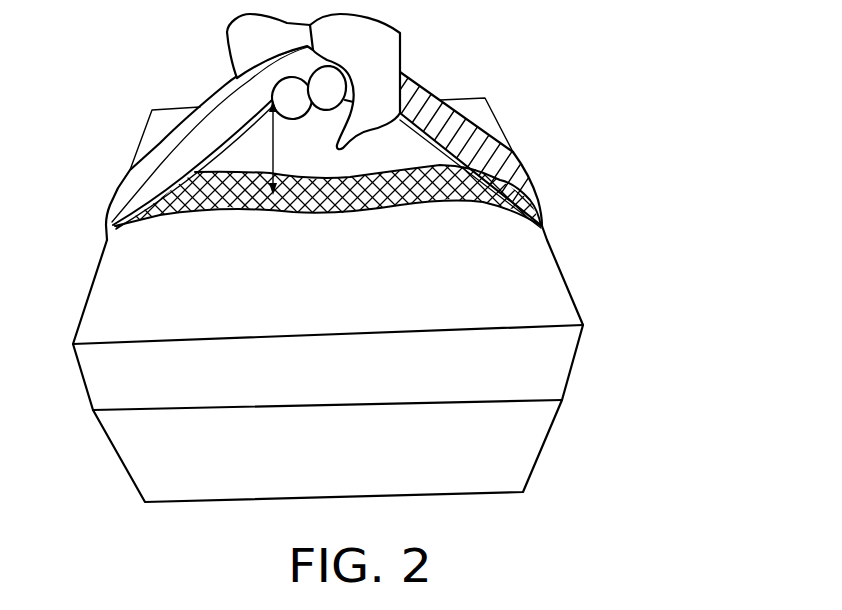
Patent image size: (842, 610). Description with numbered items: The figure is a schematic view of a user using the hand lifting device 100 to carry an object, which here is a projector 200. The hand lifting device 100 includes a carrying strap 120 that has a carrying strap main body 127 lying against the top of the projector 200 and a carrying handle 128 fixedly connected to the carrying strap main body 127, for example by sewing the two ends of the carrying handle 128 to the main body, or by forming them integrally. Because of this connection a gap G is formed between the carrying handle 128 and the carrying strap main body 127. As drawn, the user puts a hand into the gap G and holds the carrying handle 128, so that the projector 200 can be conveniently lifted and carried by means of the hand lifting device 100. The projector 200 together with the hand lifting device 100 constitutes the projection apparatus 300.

The hand lifting device 100 is at (366, 143).
The carrying strap 120 is at (366, 143).
The carrying strap main body 127 is at (483, 195).
The carrying handle 128 is at (522, 172).
The projector 200 is at (553, 294).
The projection apparatus 300 is at (395, 274).
The gap G is at (281, 147).